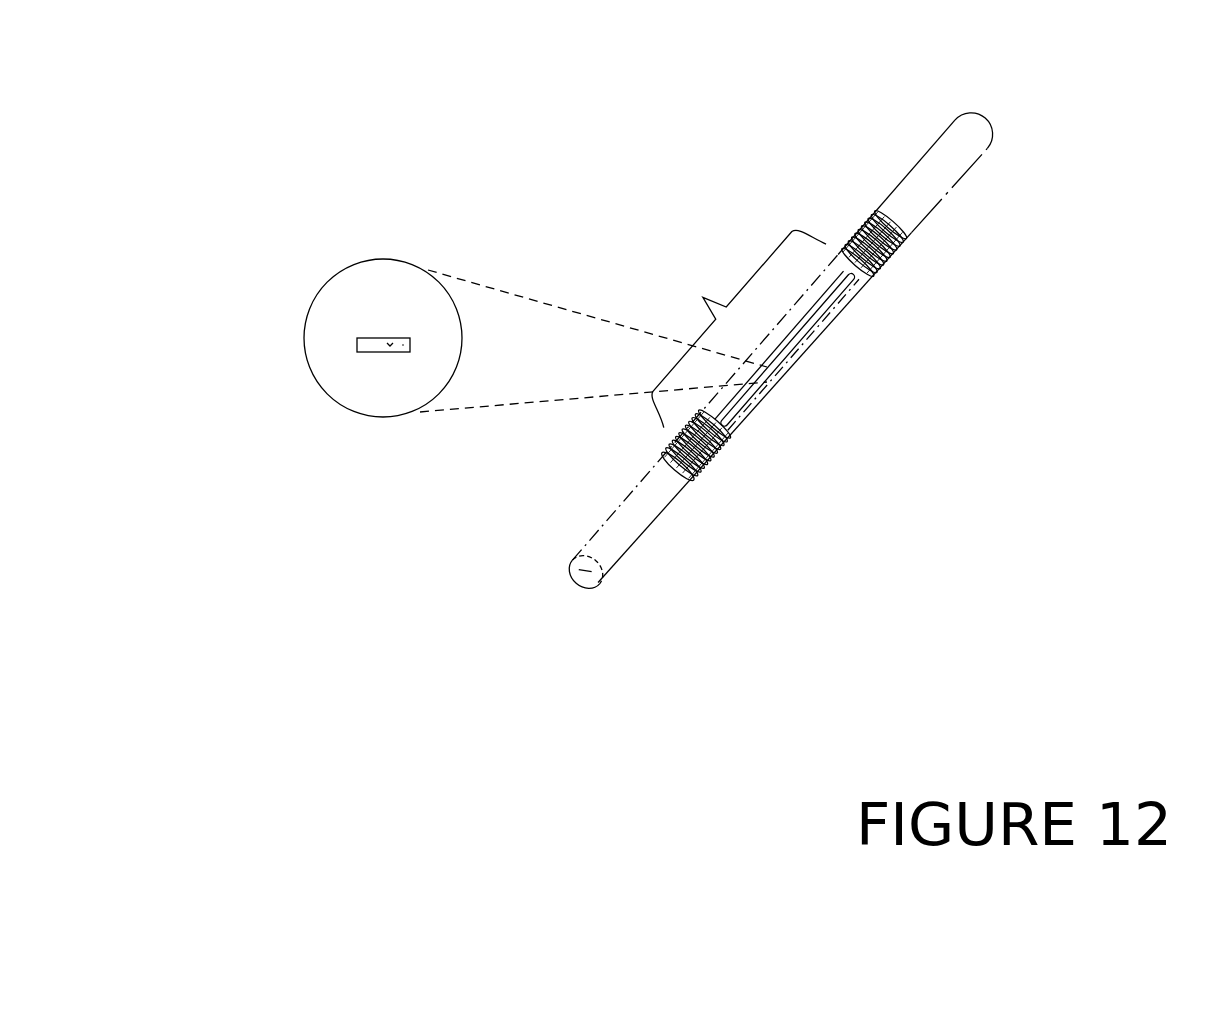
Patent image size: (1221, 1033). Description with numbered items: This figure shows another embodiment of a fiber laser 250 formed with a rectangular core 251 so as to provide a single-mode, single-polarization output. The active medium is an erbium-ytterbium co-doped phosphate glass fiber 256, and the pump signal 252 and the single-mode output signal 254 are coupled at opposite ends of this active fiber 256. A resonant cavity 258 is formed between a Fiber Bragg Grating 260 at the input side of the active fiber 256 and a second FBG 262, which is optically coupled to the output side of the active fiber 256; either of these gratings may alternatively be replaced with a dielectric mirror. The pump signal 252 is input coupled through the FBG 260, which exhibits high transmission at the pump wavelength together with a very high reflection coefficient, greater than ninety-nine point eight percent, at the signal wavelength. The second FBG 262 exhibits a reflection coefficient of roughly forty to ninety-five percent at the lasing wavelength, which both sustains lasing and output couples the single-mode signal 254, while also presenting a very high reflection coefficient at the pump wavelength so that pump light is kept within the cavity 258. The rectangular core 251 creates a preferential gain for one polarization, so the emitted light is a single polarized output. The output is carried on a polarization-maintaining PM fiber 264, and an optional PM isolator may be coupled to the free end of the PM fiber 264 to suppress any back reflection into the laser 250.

The fiber laser 250 is at (638, 207).
The rectangular core 251 is at (397, 352).
The pump signal 252 is at (1005, 102).
The single-mode output signal 254 is at (583, 582).
The Er:Yb co-doped phosphate glass fiber 256 is at (794, 356).
The resonant cavity 258 is at (708, 300).
The Fiber Bragg Grating 260 is at (888, 256).
The second FBG 262 is at (706, 460).
The PM fiber 264 is at (637, 512).